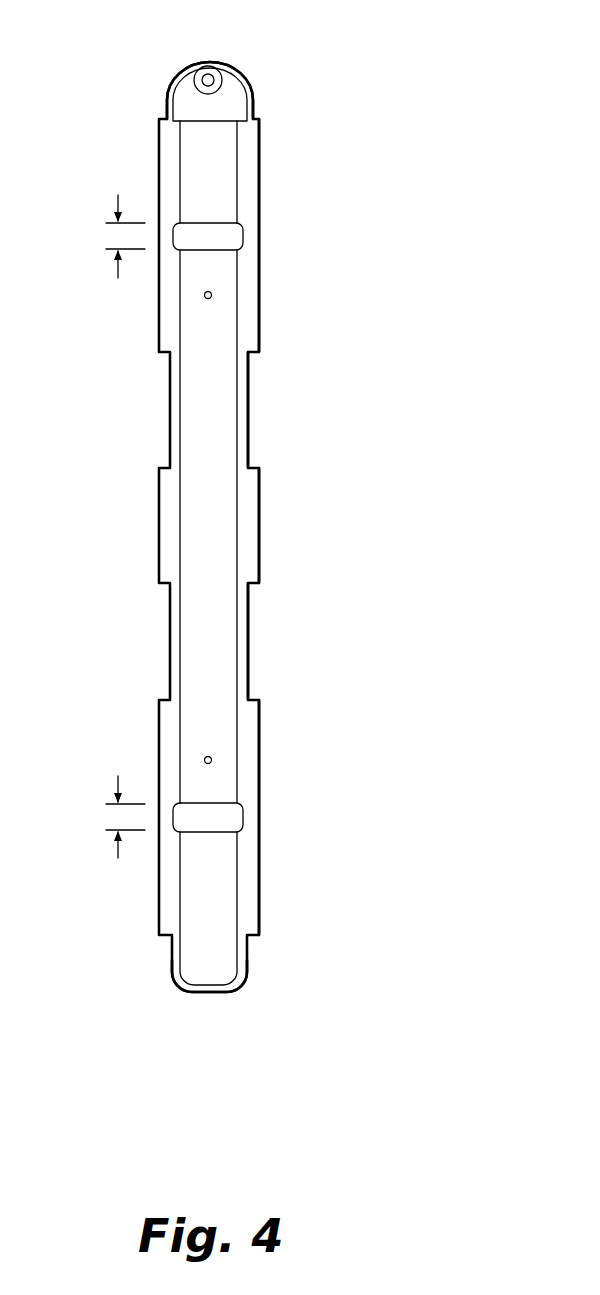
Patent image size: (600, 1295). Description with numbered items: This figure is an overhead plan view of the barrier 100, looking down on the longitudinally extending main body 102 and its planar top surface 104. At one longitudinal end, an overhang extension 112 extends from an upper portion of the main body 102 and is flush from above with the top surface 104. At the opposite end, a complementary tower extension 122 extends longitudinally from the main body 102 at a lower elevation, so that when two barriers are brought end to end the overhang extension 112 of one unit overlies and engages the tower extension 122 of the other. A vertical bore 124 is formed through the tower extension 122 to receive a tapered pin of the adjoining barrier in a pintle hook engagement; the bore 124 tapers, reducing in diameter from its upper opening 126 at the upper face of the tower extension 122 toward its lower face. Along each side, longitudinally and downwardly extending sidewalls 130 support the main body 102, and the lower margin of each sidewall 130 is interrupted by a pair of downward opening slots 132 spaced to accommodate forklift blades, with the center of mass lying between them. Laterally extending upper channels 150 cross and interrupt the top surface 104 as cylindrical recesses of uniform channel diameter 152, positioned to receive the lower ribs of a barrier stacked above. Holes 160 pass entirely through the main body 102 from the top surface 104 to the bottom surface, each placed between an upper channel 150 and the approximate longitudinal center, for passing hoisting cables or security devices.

The barrier 100 is at (422, 462).
The main body 102 is at (220, 188).
The top surface 104 is at (217, 345).
The overhang extension 112 is at (210, 993).
The tower extension 122 is at (229, 63).
The bore 124 is at (203, 73).
The upper opening 126 is at (195, 87).
The sidewalls 130 is at (261, 238).
The slots 132 is at (259, 410).
The upper channels 150 is at (203, 240).
The channel diameter 152 is at (107, 233).
The holes 160 is at (219, 752).